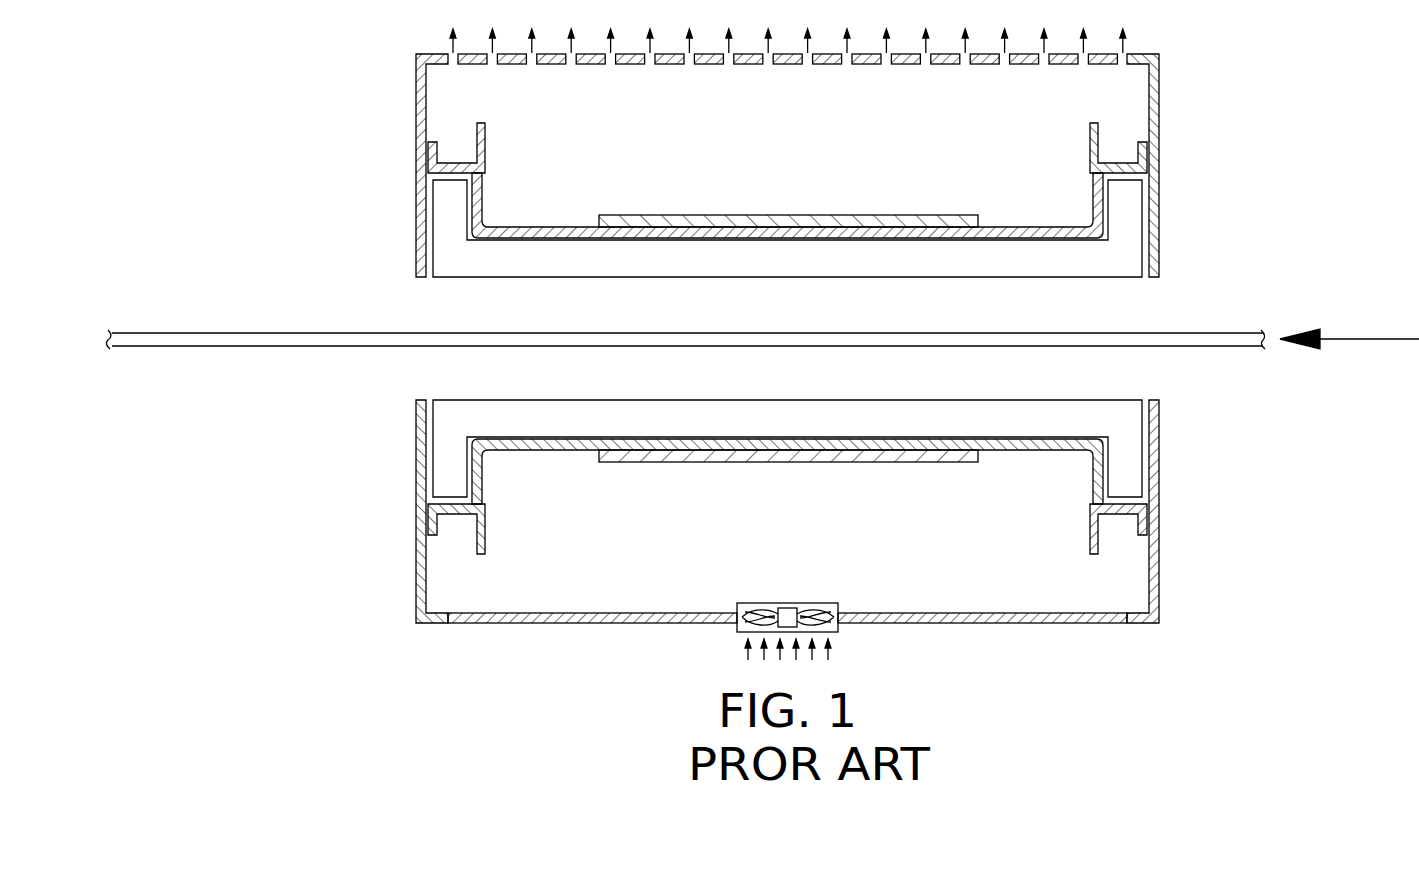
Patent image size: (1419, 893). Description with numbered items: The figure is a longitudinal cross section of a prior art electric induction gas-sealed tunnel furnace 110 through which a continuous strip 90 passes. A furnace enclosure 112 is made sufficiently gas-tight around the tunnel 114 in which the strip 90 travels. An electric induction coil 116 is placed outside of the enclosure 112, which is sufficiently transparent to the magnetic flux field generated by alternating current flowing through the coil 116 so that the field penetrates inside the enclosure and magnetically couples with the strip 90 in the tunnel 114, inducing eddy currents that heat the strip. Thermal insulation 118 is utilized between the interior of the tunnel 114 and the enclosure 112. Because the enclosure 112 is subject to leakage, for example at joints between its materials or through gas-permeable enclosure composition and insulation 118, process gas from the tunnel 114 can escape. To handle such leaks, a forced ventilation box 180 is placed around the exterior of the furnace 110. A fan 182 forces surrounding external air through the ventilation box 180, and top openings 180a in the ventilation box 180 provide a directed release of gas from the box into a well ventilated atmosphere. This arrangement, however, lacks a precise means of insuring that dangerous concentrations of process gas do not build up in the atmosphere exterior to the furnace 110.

The strip 90 is at (250, 340).
The electric induction gas-sealed tunnel furnace 110 is at (811, 344).
The furnace enclosure 112 is at (543, 229).
The tunnel 114 is at (769, 338).
The electric induction coil 116 is at (686, 221).
The thermal insulation 118 is at (457, 268).
The forced ventilation box 180 is at (823, 326).
The top openings 180a is at (574, 72).
The fan 182 is at (763, 608).